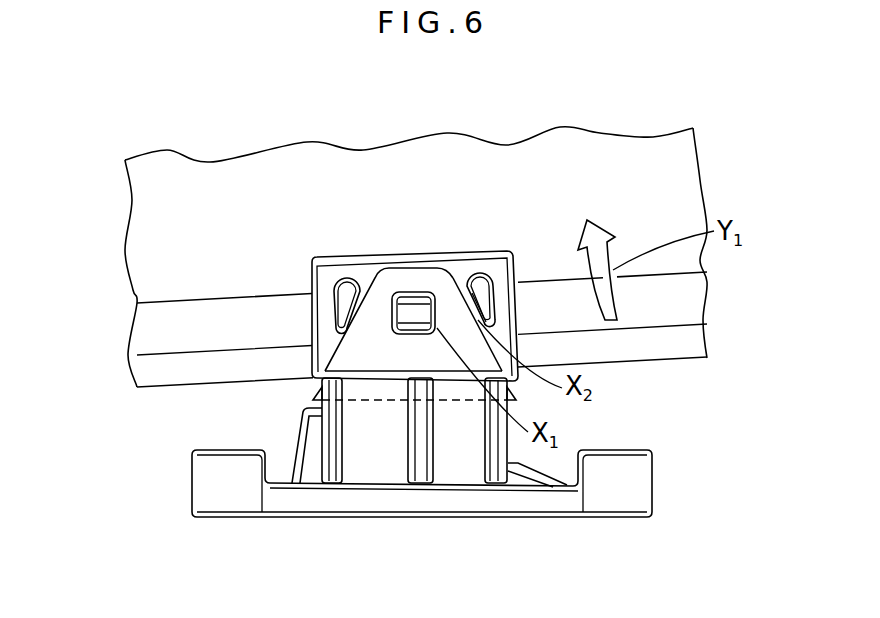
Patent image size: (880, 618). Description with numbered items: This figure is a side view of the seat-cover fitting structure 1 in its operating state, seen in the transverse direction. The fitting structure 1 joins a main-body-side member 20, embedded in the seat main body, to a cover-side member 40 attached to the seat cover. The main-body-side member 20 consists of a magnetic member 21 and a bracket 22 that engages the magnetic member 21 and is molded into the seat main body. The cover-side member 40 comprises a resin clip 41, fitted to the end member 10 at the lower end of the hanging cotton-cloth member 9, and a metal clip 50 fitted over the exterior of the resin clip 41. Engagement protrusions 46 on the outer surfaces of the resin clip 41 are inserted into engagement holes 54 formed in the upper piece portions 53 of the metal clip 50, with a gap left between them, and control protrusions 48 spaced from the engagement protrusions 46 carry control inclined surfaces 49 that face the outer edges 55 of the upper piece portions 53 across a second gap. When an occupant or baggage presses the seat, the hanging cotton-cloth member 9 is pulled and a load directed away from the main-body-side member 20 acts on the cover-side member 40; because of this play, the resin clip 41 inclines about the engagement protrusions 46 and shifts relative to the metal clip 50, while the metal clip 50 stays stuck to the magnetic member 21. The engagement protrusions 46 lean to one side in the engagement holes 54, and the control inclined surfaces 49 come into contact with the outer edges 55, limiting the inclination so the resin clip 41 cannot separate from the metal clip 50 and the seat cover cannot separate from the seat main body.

The fitting structure 1 is at (124, 107).
The hanging cotton-cloth member 9 is at (143, 218).
The end member 10 is at (145, 333).
The cover-side member 40 is at (270, 100).
The resin clip 41 is at (330, 246).
The metal clip 50 is at (330, 330).
The engagement protrusion 46 is at (432, 277).
The upper piece portion 53 is at (447, 277).
The control inclined surface 49 is at (412, 282).
The control protrusion 48 is at (348, 284).
The outer edge 55 is at (352, 320).
The engagement hole 54 is at (397, 333).
The magnetic member 21 is at (457, 453).
The main-body-side member 20 is at (311, 533).
The bracket 22 is at (422, 460).